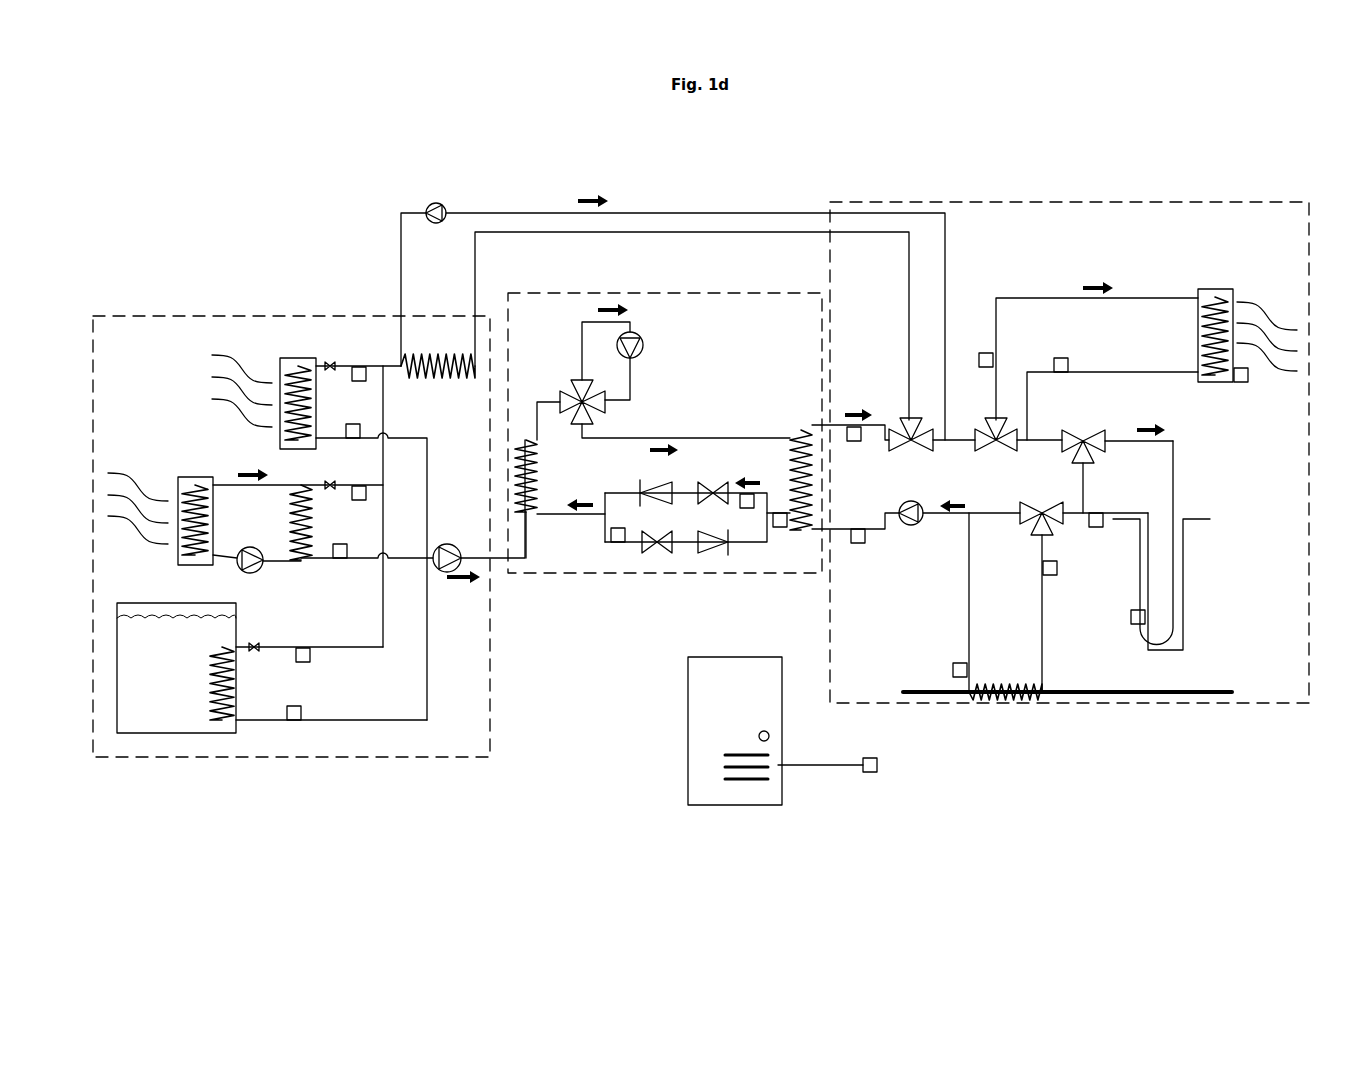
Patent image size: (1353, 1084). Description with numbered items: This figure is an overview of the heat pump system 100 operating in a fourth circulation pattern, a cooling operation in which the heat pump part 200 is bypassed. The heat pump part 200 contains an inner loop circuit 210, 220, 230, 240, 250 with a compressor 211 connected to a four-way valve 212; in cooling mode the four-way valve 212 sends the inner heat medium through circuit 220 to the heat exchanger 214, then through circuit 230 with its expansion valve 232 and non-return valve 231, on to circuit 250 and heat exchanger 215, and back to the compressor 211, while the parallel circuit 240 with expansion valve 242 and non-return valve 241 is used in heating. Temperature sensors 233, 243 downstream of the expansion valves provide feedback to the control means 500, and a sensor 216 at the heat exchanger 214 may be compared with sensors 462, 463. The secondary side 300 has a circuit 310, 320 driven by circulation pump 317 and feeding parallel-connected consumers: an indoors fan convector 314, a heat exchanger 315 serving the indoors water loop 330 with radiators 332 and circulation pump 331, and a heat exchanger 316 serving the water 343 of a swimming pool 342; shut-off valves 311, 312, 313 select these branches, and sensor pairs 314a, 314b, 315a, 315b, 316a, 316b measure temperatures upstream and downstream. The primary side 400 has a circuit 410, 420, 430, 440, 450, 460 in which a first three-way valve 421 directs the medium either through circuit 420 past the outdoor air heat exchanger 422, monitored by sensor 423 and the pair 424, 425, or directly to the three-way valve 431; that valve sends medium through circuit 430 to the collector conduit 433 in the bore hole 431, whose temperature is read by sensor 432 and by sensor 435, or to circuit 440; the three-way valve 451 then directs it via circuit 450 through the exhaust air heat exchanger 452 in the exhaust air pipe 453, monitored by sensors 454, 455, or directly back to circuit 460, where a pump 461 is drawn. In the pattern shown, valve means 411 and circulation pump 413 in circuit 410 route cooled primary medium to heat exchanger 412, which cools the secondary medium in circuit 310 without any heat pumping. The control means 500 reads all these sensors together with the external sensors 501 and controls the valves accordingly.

The heat pump system 100 is at (283, 243).
The heat pump part 200 is at (665, 433).
The inner loop heat medium circuit 210 is at (632, 332).
The compressor 211 is at (625, 352).
The four-way valve 212 is at (580, 410).
The heat exchanger 214 is at (815, 443).
The heat exchanger 215 is at (517, 480).
The temperature sensor 216 is at (784, 529).
The circuit 220 is at (765, 438).
The circuit 230 is at (598, 520).
The non-return valve 231 is at (655, 484).
The expansion valve 232 is at (727, 486).
The temperature sensor 233 is at (745, 508).
The circuit 240 is at (630, 545).
The non-return valve 241 is at (712, 535).
The expansion valve 242 is at (655, 537).
The temperature sensor 243 is at (618, 543).
The circuit 250 is at (563, 515).
The secondary side part 300 is at (291, 536).
The heat medium circuit 310 is at (350, 647).
The shut-off valve 311 is at (358, 357).
The shut-off valve 312 is at (327, 476).
The shut-off valve 313 is at (260, 636).
The indoors fan convector 314 is at (296, 393).
The temperature sensor 314a is at (345, 382).
The temperature sensor 314b is at (357, 421).
The heat exchanger 315 is at (282, 522).
The temperature sensor 315a is at (341, 500).
The temperature sensor 315b is at (350, 542).
The heat exchanger 316 is at (206, 683).
The temperature sensor 316a is at (289, 665).
The temperature sensor 316b is at (305, 704).
The circulation pump 317 is at (456, 550).
The heat medium circuit 320 is at (427, 720).
The indoors water loop 330 is at (230, 485).
The circulation pump 331 is at (257, 551).
The indoors radiators 332 is at (194, 511).
The swimming pool 342 is at (175, 658).
The water 343 is at (176, 676).
The primary side part 400 is at (1069, 452).
The circuit 410 is at (673, 315).
The valve means 411 is at (893, 438).
The heat exchanger 412 is at (438, 354).
The circulation pump 413 is at (437, 202).
The circuit 420 is at (1153, 297).
The first three-way valve 421 is at (1018, 442).
The air heat exchanger 422 is at (1247, 326).
The temperature sensor 423 is at (1248, 384).
The temperature sensor 424 is at (978, 350).
The temperature sensor 425 is at (1051, 355).
The circuit 430 is at (1173, 455).
The bore hole 431 is at (1135, 532).
The temperature sensor 432 is at (1120, 617).
The collector conduit 433 is at (1183, 565).
The temperature sensor 435 is at (1084, 529).
The circuit 440 is at (1083, 488).
The circuit 450 is at (971, 596).
The three-way valve 451 is at (1041, 590).
The heat exchanger 452 is at (990, 700).
The exhaust air pipe 453 is at (1067, 680).
The temperature sensor 454 is at (943, 670).
The temperature sensor 455 is at (1056, 579).
The circuit 460 is at (945, 520).
The circulation pump 461 is at (914, 522).
The temperature sensor 462 is at (864, 545).
The temperature sensor 463 is at (860, 443).
The control means 500 is at (735, 731).
The sensors 501 is at (844, 767).